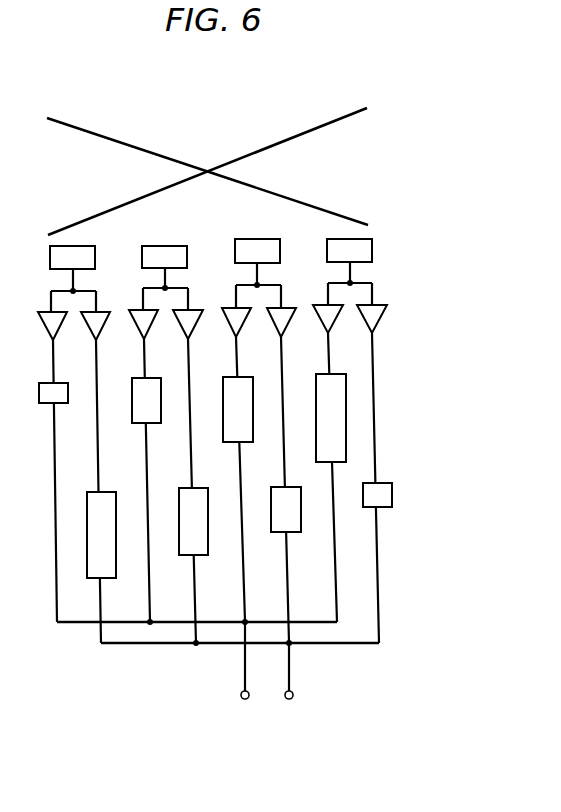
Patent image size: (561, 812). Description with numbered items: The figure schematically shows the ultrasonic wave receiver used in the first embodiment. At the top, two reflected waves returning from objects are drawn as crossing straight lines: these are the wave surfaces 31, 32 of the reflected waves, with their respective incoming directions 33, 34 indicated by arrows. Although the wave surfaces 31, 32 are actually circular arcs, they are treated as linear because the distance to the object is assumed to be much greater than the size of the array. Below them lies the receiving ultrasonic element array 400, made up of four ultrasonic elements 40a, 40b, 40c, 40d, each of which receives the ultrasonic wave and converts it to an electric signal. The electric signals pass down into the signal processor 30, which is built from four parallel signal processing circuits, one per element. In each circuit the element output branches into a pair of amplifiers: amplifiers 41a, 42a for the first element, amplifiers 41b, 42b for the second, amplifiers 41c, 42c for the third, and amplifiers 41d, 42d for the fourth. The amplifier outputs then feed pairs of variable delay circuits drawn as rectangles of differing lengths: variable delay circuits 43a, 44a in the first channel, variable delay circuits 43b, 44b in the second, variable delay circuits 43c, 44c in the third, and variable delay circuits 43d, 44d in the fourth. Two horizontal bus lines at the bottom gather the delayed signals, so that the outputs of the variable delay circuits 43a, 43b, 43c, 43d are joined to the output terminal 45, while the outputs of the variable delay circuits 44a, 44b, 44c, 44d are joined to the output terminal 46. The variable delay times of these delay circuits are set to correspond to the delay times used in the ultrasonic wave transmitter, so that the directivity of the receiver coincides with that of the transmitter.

The signal processor 30 is at (452, 446).
The wave surface 31 is at (356, 111).
The wave surface 32 is at (356, 221).
The incoming direction 33 is at (227, 150).
The incoming direction 34 is at (130, 130).
The receiving ultrasonic element array 400 is at (452, 259).
The ultrasonic element 40a is at (93, 253).
The ultrasonic element 40b is at (184, 253).
The ultrasonic element 40c is at (276, 247).
The ultrasonic element 40d is at (368, 247).
The amplifier 41a is at (94, 328).
The amplifier 41b is at (186, 327).
The amplifier 41c is at (279, 325).
The amplifier 41d is at (371, 322).
The amplifier 42a is at (50, 328).
The amplifier 42b is at (142, 327).
The amplifier 42c is at (235, 325).
The amplifier 42d is at (327, 322).
The variable delay circuit 43a is at (109, 566).
The variable delay circuit 43b is at (202, 543).
The variable delay circuit 43c is at (293, 518).
The variable delay circuit 43d is at (385, 496).
The variable delay circuit 44a is at (51, 393).
The variable delay circuit 44b is at (143, 411).
The variable delay circuit 44c is at (236, 435).
The variable delay circuit 44d is at (328, 452).
The output terminal 45 is at (289, 699).
The output terminal 46 is at (245, 699).